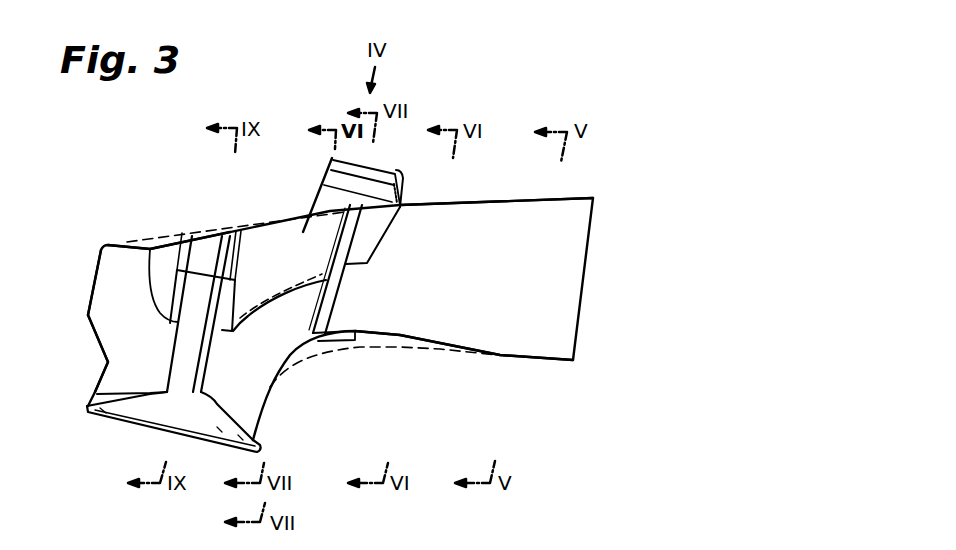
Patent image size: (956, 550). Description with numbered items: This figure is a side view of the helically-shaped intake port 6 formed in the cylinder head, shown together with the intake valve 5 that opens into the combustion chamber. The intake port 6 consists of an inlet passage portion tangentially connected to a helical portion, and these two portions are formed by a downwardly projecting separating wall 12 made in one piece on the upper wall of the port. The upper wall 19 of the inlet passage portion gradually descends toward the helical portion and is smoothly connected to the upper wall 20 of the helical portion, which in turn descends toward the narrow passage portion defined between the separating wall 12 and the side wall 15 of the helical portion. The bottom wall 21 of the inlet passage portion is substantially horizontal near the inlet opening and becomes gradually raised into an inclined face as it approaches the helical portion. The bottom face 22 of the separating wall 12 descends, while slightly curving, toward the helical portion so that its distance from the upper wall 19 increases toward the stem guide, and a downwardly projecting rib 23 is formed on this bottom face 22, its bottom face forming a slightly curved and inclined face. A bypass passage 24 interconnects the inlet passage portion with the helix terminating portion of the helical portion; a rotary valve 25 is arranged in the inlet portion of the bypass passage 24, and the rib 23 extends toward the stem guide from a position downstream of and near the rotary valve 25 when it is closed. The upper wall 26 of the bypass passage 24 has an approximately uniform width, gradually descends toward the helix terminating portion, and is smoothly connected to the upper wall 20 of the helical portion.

The intake valve 5 is at (130, 418).
The helically-shaped intake port 6 is at (487, 280).
The separating wall 12 is at (270, 238).
The side wall of the helical portion 15 is at (96, 284).
The upper wall of the inlet passage portion 19 is at (476, 210).
The upper wall of the helical portion 20 is at (128, 248).
The bottom wall of the inlet passage portion 21 is at (449, 336).
The bottom face of the separating wall 22 is at (363, 267).
The rib 23 is at (270, 303).
The bypass passage 24 is at (302, 230).
The rotary valve 25 is at (347, 298).
The upper wall of the bypass passage 26 is at (232, 232).